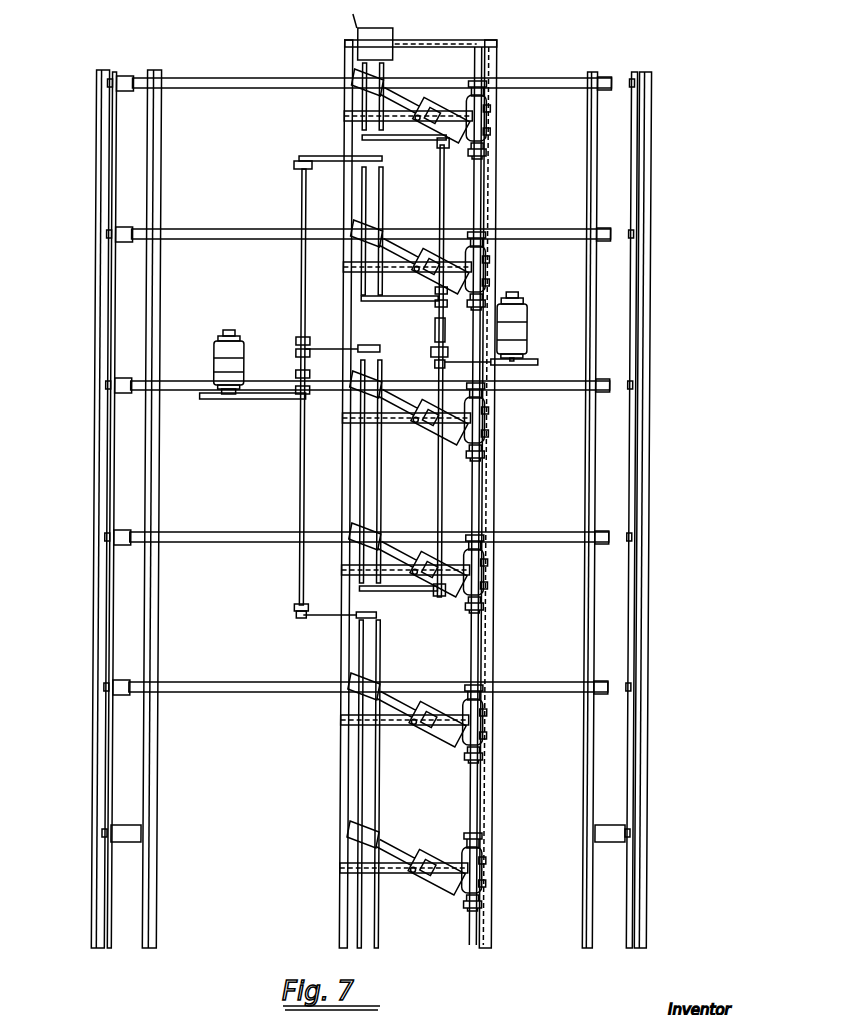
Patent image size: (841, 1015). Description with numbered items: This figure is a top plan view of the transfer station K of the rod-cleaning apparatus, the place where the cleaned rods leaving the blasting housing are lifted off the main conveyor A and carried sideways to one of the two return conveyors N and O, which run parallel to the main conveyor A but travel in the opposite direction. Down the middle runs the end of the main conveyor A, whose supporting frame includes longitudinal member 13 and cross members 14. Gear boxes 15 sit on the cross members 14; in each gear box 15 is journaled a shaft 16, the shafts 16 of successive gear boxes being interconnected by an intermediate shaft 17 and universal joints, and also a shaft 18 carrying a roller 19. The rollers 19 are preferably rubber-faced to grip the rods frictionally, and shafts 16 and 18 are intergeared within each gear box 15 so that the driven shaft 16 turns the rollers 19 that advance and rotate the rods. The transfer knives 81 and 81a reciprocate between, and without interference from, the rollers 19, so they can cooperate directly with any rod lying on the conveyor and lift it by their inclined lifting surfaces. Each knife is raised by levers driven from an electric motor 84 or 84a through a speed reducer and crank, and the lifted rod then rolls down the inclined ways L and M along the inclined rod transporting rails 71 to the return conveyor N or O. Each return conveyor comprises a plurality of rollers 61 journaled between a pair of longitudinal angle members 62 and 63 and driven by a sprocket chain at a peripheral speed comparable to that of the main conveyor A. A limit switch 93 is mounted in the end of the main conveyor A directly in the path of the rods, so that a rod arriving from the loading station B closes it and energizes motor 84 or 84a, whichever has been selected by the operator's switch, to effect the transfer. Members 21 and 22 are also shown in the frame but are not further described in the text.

The longitudinal member 13 is at (492, 143).
The cross member 14 is at (408, 423).
The gear box 15 is at (467, 125).
The shaft 16 is at (488, 548).
The intermediate shaft 17 is at (484, 485).
The shaft 18 is at (402, 240).
The roller 19 is at (372, 377).
The left frame upright 21 is at (348, 794).
The rod 22 is at (378, 794).
The roller 61 is at (130, 92).
The longitudinal angle member 62 is at (590, 148).
The longitudinal angle member 63 is at (652, 150).
The inclined rod transporting rail 71 is at (271, 80).
The transfer knife 81 is at (380, 140).
The transfer knife 81a is at (362, 148).
The electric motor 84 is at (532, 312).
The electric motor 84a is at (222, 338).
The limit switch 93 is at (388, 35).
The main conveyor A is at (380, 778).
The loading station B is at (87, 49).
The transfer station K is at (668, 284).
The inclined way L is at (544, 220).
The inclined way M is at (209, 222).
The return conveyor N is at (80, 630).
The return conveyor O is at (663, 603).